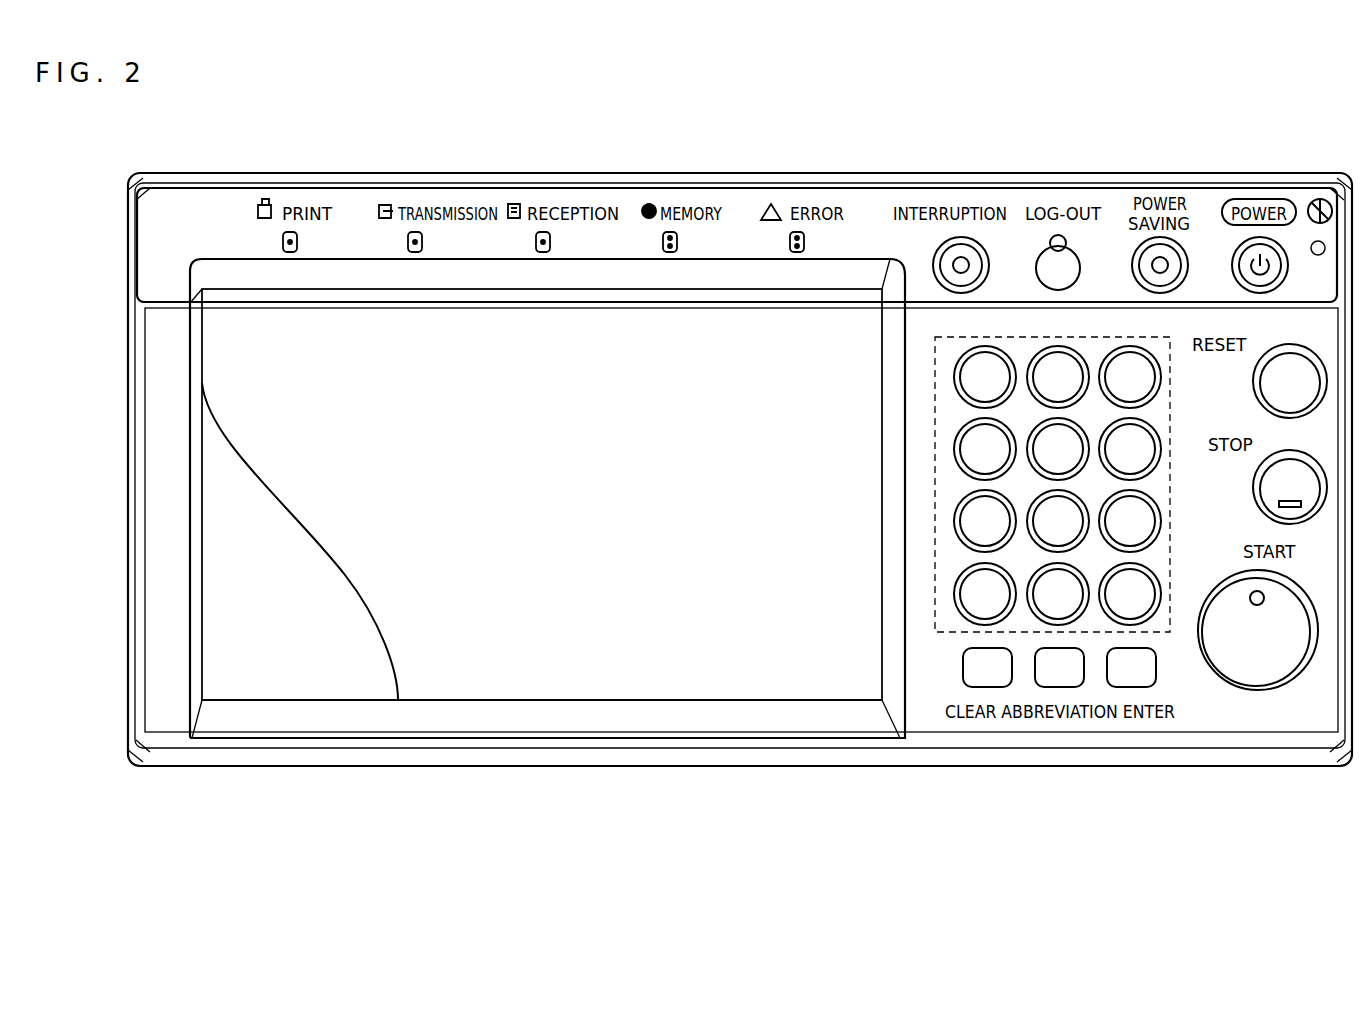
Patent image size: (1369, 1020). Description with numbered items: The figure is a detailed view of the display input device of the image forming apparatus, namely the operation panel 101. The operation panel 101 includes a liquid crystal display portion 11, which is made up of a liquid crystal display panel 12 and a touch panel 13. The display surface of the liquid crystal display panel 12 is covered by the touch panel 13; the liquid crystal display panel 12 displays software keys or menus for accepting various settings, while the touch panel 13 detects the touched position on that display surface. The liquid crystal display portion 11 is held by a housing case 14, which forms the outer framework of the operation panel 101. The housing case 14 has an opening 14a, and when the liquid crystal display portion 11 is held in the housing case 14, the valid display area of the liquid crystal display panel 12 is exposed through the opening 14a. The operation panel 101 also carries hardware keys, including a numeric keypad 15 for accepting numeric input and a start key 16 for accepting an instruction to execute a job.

The operation panel 101 is at (166, 176).
The liquid crystal display portion 11 is at (542, 586).
The liquid crystal display panel 12 is at (524, 843).
The touch panel 13 is at (500, 678).
The housing case 14 is at (913, 706).
The opening 14a is at (747, 700).
The numeric keypad 15 is at (1172, 626).
The start key 16 is at (1263, 673).